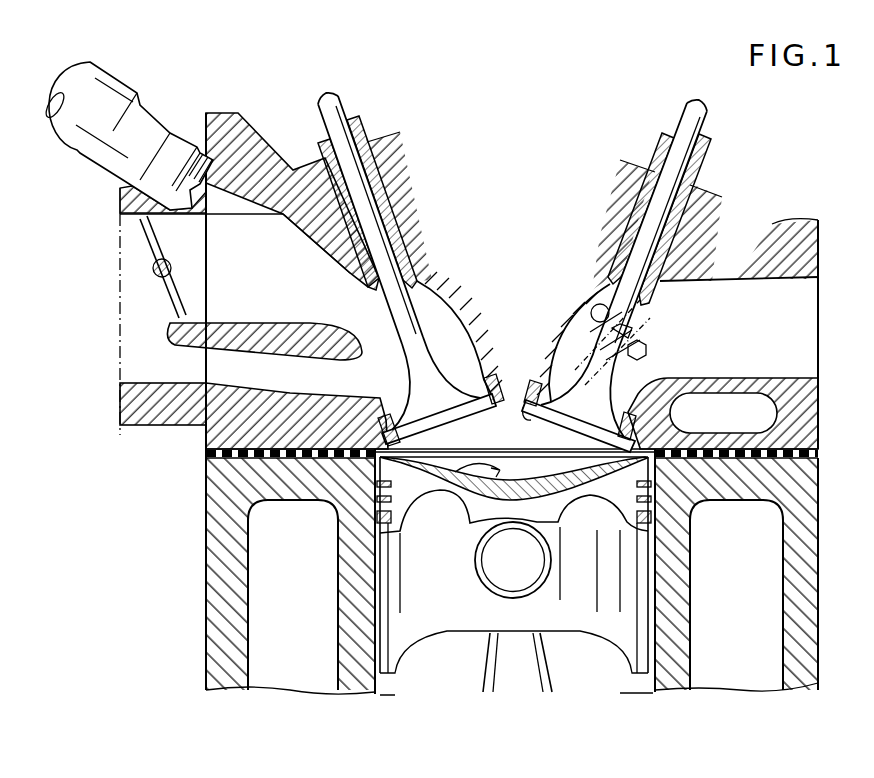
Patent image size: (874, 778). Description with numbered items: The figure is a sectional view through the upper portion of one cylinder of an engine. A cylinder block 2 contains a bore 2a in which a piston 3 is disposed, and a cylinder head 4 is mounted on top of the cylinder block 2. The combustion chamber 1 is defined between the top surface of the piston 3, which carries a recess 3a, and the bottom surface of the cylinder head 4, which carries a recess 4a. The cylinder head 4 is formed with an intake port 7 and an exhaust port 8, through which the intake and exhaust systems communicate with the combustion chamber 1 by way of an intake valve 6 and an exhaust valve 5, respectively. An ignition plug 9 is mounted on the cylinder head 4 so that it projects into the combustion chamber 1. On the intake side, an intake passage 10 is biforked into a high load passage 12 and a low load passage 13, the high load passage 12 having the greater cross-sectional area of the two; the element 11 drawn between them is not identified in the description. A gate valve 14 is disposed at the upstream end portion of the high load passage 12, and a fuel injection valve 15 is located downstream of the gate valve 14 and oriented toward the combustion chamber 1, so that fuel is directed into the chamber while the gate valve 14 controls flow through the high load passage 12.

The combustion chamber 1 is at (497, 446).
The cylinder block 2 is at (807, 568).
The bore 2a is at (650, 577).
The piston 3 is at (443, 620).
The recess 3a is at (450, 470).
The cylinder head 4 is at (807, 423).
The recess 4a is at (513, 412).
The exhaust valve 5 is at (387, 227).
The intake valve 6 is at (647, 230).
The intake port 7 is at (463, 347).
The exhaust port 8 is at (735, 293).
The ignition plug 9 is at (640, 350).
The intake passage 10 is at (137, 320).
The partition wall 11 is at (326, 340).
The high load passage 12 is at (230, 303).
The low load passage 13 is at (200, 390).
The gate valve 14 is at (145, 238).
The fuel injection valve 15 is at (147, 127).